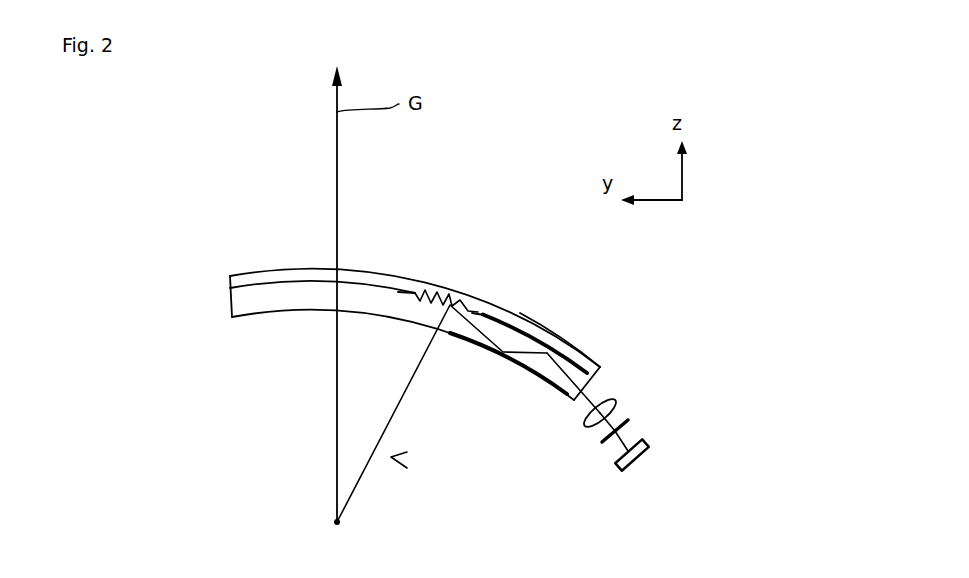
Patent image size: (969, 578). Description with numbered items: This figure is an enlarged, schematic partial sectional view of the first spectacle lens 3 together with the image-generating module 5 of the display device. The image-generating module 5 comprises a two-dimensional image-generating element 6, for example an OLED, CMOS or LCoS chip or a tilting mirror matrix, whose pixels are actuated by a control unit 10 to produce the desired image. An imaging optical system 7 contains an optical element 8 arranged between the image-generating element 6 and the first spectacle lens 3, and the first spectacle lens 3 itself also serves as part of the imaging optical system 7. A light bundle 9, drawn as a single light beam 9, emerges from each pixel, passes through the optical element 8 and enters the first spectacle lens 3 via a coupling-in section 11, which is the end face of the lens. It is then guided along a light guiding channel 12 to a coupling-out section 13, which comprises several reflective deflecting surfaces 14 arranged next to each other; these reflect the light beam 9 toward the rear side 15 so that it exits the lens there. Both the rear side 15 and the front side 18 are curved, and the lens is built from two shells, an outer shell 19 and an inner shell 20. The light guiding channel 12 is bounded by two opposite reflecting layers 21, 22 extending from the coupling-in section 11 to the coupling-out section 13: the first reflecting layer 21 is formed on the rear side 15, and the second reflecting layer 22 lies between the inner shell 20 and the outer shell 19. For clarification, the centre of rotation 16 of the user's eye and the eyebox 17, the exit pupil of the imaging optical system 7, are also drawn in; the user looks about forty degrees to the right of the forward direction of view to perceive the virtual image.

The first spectacle lens 3 is at (370, 332).
The image-generating module 5 is at (646, 414).
The image-generating element 6 is at (630, 428).
The imaging optical system 7 is at (631, 392).
The optical element 8 is at (587, 437).
The light bundle 9 is at (588, 395).
The control unit 10 is at (630, 468).
The coupling-in section 11 is at (572, 395).
The light guiding channel 12 is at (503, 352).
The coupling-out section 13 is at (448, 286).
The reflective deflecting surfaces 14 is at (419, 296).
The rear side 15 is at (253, 318).
The centre of rotation 16 is at (340, 524).
The eyebox 17 is at (356, 438).
The front side 18 is at (254, 271).
The outer shell 19 is at (297, 274).
The inner shell 20 is at (245, 311).
The first reflecting layer 21 is at (532, 372).
The second reflecting layer 22 is at (553, 346).